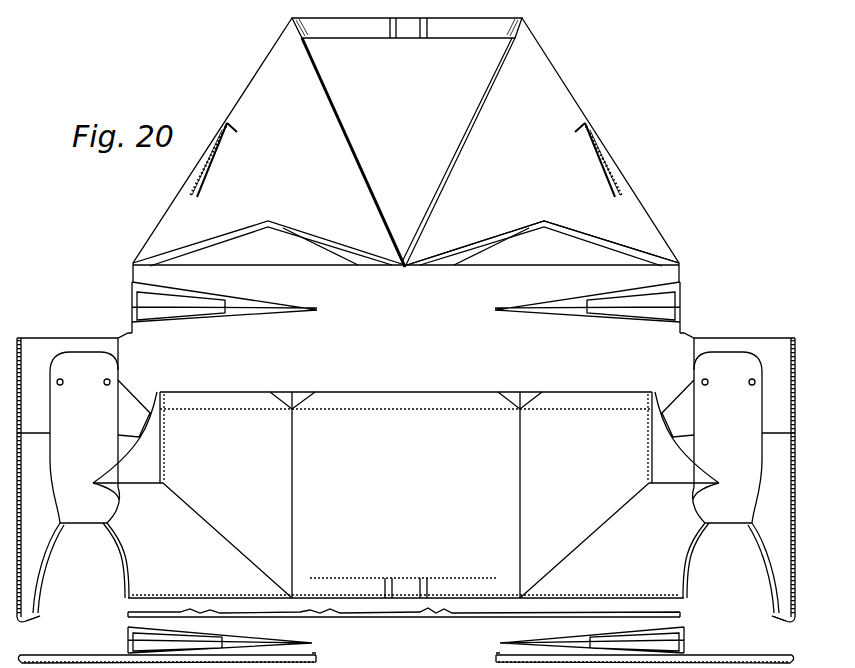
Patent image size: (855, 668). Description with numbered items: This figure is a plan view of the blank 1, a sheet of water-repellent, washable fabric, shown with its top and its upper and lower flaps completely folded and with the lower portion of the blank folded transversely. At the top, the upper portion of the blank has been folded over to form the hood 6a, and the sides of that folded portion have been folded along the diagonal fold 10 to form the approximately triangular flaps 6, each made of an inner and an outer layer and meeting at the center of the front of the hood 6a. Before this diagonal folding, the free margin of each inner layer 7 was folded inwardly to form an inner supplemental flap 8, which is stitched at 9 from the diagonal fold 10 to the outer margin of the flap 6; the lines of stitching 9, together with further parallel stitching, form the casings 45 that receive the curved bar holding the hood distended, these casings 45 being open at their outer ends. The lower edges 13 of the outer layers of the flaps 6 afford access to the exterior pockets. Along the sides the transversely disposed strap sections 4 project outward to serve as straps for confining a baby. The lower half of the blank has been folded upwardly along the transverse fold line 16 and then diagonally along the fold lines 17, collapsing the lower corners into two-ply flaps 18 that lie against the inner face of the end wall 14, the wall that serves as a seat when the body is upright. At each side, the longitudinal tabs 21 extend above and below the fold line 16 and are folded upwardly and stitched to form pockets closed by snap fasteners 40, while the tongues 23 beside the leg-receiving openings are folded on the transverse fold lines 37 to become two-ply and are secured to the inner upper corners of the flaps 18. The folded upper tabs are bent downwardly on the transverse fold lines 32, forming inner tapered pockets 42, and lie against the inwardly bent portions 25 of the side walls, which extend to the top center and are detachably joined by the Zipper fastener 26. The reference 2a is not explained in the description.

The blank 1 is at (410, 650).
The bottom strip section 2a is at (406, 660).
The strap section 4 is at (196, 304).
The triangular flap 6 is at (268, 185).
The hood 6a is at (390, 112).
The inner layer 7 is at (327, 260).
The inner supplemental flap 8 is at (300, 270).
The stitching 9 is at (192, 176).
The diagonal fold 10 is at (577, 111).
The lower edge 13 is at (560, 224).
The end wall 14 is at (412, 523).
The transverse fold line 16 is at (226, 598).
The diagonal fold line 17 is at (198, 514).
The two-ply flap 18 is at (225, 477).
The longitudinal tab 21 is at (53, 444).
The tongue 23 is at (28, 557).
The inwardly bent portion 25 is at (91, 346).
The Zipper fastener 26 is at (10, 475).
The transverse fold line 32 is at (132, 410).
The transverse fold line 37 is at (32, 616).
The snap fastener 40 is at (105, 379).
The inner tapered pocket 42 is at (120, 363).
The casing 45 is at (208, 164).